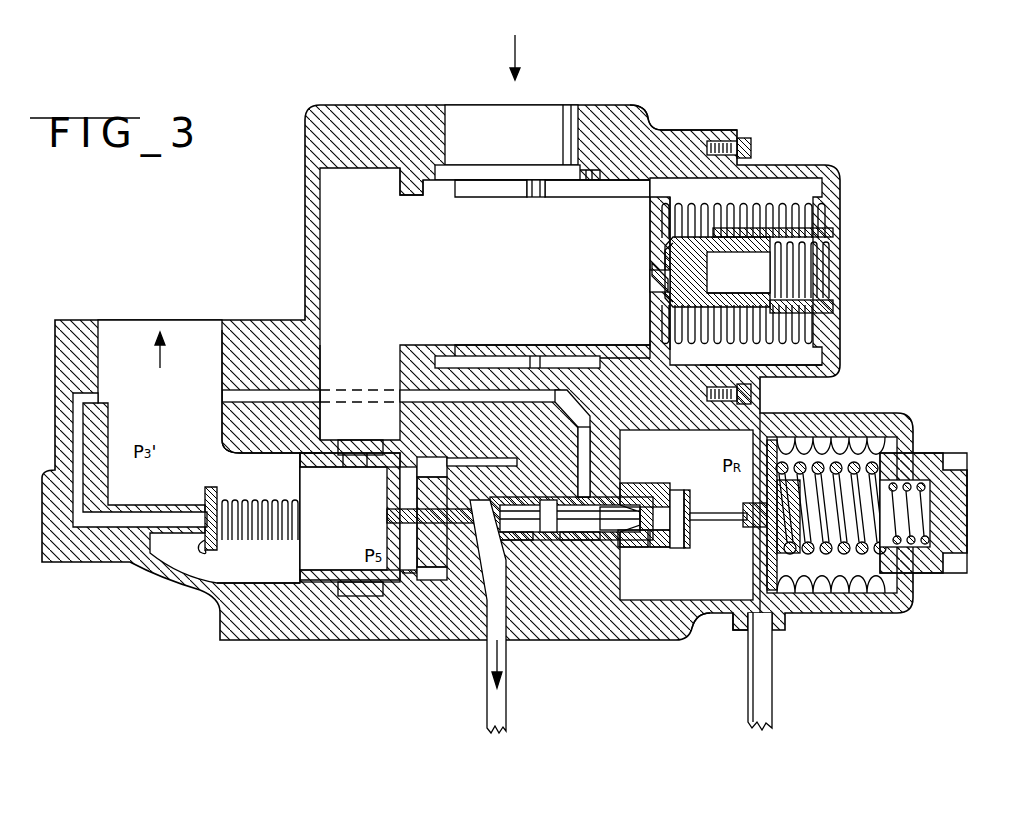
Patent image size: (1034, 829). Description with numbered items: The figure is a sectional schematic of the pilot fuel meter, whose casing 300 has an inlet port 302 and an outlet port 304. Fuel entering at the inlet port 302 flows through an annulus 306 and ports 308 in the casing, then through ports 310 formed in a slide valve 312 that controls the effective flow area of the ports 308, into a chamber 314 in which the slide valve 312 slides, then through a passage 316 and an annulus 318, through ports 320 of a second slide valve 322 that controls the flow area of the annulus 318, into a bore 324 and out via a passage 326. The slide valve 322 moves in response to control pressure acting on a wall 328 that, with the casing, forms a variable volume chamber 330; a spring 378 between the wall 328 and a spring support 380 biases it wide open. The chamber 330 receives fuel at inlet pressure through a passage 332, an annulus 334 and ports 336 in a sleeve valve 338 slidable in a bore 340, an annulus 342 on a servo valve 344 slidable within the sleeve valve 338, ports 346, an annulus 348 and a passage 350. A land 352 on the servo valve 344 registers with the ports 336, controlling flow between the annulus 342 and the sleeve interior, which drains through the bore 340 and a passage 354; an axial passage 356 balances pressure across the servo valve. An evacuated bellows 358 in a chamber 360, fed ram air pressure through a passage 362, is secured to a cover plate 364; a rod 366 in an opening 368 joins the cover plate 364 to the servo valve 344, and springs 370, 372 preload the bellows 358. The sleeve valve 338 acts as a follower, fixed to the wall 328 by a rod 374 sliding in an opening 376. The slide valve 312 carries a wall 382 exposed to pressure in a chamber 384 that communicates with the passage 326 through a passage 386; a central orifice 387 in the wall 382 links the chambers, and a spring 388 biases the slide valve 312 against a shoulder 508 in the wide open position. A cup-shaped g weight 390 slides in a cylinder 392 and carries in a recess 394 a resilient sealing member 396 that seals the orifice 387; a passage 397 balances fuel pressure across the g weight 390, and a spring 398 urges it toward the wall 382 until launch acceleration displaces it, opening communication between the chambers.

The casing 300 is at (665, 130).
The inlet port 302 is at (445, 118).
The outlet port 304 is at (100, 338).
The annulus 306 is at (447, 170).
The ports 308 is at (520, 188).
The shoulder 508 is at (412, 200).
The ports 310 is at (540, 190).
The slide valve 312 is at (497, 345).
The chamber 314 is at (500, 274).
The passage 316 is at (322, 368).
The annulus 318 is at (376, 440).
The ports 320 is at (372, 541).
The slide valve 322 is at (312, 570).
The bore 324 is at (262, 590).
The passage 326 is at (217, 340).
The wall 328 is at (387, 479).
The variable volume chamber 330 is at (412, 585).
The passage 332 is at (494, 460).
The annulus 334 is at (548, 500).
The ports 336 is at (572, 496).
The sleeve valve 338 is at (523, 538).
The bore 340 is at (572, 540).
The annulus 342 is at (630, 547).
The servo valve 344 is at (668, 547).
The ports 346 is at (595, 500).
The annulus 348 is at (650, 505).
The passage 350 is at (592, 448).
The land 352 is at (566, 532).
The passage 354 is at (486, 683).
The axial passage 356 is at (608, 532).
The evacuated bellows 358 is at (848, 437).
The chamber 360 is at (725, 600).
The passage 362 is at (775, 692).
The cover plate 364 is at (772, 430).
The rod 366 is at (718, 523).
The opening 368 is at (690, 500).
The spring 370 is at (931, 500).
The spring 372 is at (860, 466).
The rod 374 is at (468, 508).
The opening 376 is at (447, 560).
The spring 378 is at (262, 495).
The spring support 380 is at (195, 548).
The wall 382 is at (650, 236).
The chamber 384 is at (740, 362).
The passage 386 is at (275, 396).
The orifice 387 is at (652, 281).
The spring 388 is at (780, 200).
The g weight 390 is at (835, 273).
The cylinder 392 is at (842, 356).
The recess 394 is at (710, 263).
The resilient sealing member 396 is at (650, 312).
The passage 397 is at (700, 285).
The spring 398 is at (835, 251).